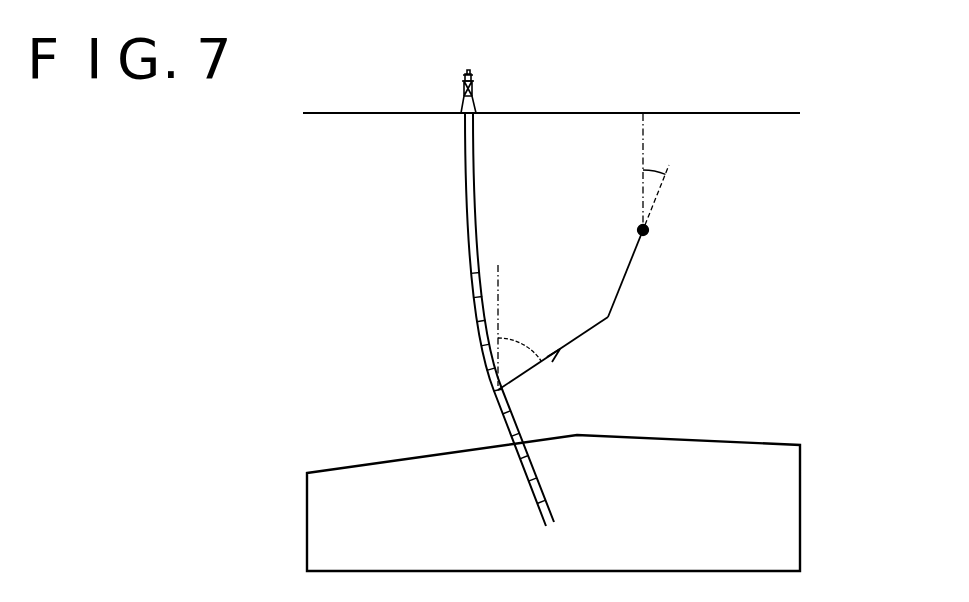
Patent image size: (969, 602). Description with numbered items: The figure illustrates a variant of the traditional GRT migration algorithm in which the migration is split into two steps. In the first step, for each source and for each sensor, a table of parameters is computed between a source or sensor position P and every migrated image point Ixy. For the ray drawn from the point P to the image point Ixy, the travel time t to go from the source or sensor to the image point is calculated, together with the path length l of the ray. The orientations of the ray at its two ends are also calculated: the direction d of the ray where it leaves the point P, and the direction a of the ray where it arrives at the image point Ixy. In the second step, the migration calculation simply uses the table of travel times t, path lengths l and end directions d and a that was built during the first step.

The source or sensor position P is at (509, 319).
The migrated image point Ixy is at (666, 232).
The direction of the ray at its end d is at (542, 325).
The travel time parameter t is at (555, 326).
The path length l is at (657, 273).
The direction of the ray at its end a is at (690, 169).